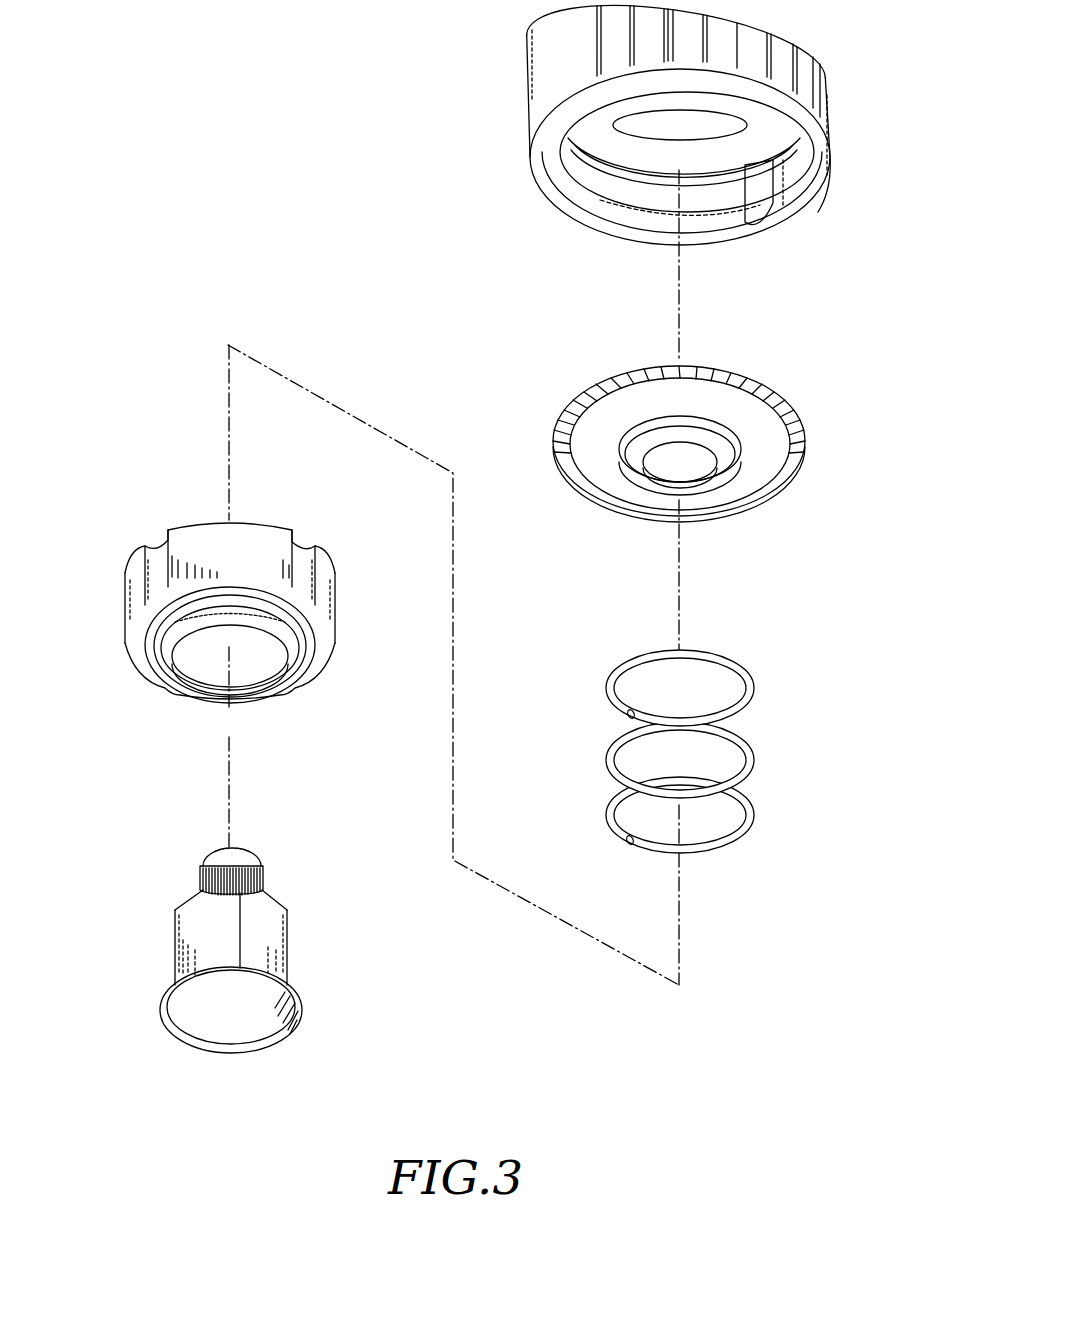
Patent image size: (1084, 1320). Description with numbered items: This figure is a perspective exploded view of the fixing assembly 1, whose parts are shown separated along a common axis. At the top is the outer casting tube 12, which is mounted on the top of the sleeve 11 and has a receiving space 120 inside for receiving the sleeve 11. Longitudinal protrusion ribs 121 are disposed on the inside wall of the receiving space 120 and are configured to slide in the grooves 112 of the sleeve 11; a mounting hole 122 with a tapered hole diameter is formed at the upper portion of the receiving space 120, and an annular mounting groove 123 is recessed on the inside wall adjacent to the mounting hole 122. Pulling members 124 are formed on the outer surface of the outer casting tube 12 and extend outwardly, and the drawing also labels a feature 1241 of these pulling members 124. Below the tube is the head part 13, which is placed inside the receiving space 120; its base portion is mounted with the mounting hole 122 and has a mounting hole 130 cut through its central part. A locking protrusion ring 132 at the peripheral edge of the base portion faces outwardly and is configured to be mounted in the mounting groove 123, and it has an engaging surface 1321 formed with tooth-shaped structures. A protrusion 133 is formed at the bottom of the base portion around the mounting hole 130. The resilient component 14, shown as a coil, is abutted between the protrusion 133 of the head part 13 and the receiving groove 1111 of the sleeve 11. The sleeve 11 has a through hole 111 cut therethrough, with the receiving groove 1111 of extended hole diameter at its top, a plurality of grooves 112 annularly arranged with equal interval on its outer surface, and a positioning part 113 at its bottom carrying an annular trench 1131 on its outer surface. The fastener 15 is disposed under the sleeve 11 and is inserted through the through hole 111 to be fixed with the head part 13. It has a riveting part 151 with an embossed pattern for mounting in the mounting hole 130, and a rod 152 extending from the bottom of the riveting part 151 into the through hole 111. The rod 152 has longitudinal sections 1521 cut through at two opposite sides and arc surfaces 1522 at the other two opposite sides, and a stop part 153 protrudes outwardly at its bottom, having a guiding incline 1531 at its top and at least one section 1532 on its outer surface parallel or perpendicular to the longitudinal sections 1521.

The fixing assembly 1 is at (313, 300).
The sleeve 11 is at (265, 615).
The through hole 111 is at (262, 686).
The receiving groove 1111 is at (198, 668).
The grooves 112 is at (153, 570).
The positioning part 113 is at (297, 652).
The annular trench 1131 is at (237, 607).
The outer casting tube 12 is at (564, 157).
The receiving space 120 is at (708, 225).
The longitudinal protrusion ribs 121 is at (752, 200).
The mounting hole 122 is at (665, 145).
The annular mounting groove 123 is at (613, 175).
The pulling members 124 is at (559, 61).
The grooves on outer wall 1241 is at (557, 52).
The head part 13 is at (685, 463).
The mounting hole 130 is at (712, 472).
The locking protrusion ring 132 is at (604, 410).
The engaging surface 1321 is at (553, 430).
The protrusion 133 is at (640, 468).
The resilient component 14 is at (745, 688).
The fastener 15 is at (293, 949).
The riveting part 151 is at (258, 865).
The rod 152 is at (293, 937).
The longitudinal sections 1521 is at (275, 930).
The arc surfaces 1522 is at (188, 937).
The stop part 153 is at (277, 995).
The guiding incline 1531 is at (250, 970).
The section 1532 is at (293, 993).